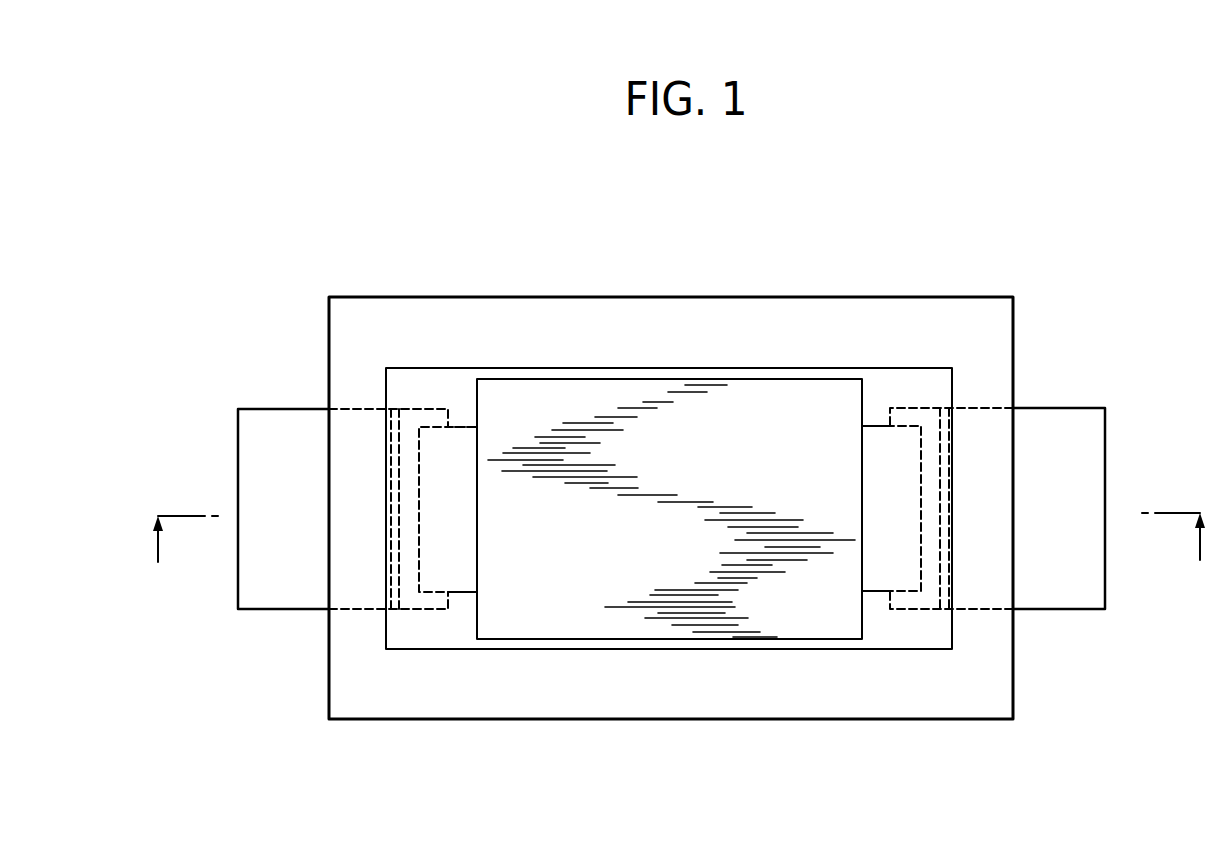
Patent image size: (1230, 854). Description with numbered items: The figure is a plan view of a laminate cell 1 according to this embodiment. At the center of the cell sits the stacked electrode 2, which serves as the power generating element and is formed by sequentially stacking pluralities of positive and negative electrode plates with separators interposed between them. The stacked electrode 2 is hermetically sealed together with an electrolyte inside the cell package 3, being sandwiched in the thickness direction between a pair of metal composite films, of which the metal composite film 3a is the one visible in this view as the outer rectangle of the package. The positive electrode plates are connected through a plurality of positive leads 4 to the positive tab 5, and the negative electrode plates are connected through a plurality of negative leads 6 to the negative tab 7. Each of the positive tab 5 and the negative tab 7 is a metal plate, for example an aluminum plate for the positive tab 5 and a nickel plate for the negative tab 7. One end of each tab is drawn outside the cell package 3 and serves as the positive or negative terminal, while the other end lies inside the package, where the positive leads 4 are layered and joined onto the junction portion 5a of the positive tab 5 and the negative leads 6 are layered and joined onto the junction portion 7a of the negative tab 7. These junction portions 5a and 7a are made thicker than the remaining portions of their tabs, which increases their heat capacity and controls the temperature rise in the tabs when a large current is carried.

The laminate cell 1 is at (978, 224).
The stacked electrode 2 is at (775, 400).
The cell package 3 is at (671, 544).
The metal composite film 3a is at (705, 693).
The positive lead 4 is at (460, 578).
The positive tab 5 is at (280, 431).
The junction portion 5a is at (412, 597).
The negative lead 6 is at (883, 570).
The negative tab 7 is at (1077, 431).
The junction portion 7a is at (927, 598).